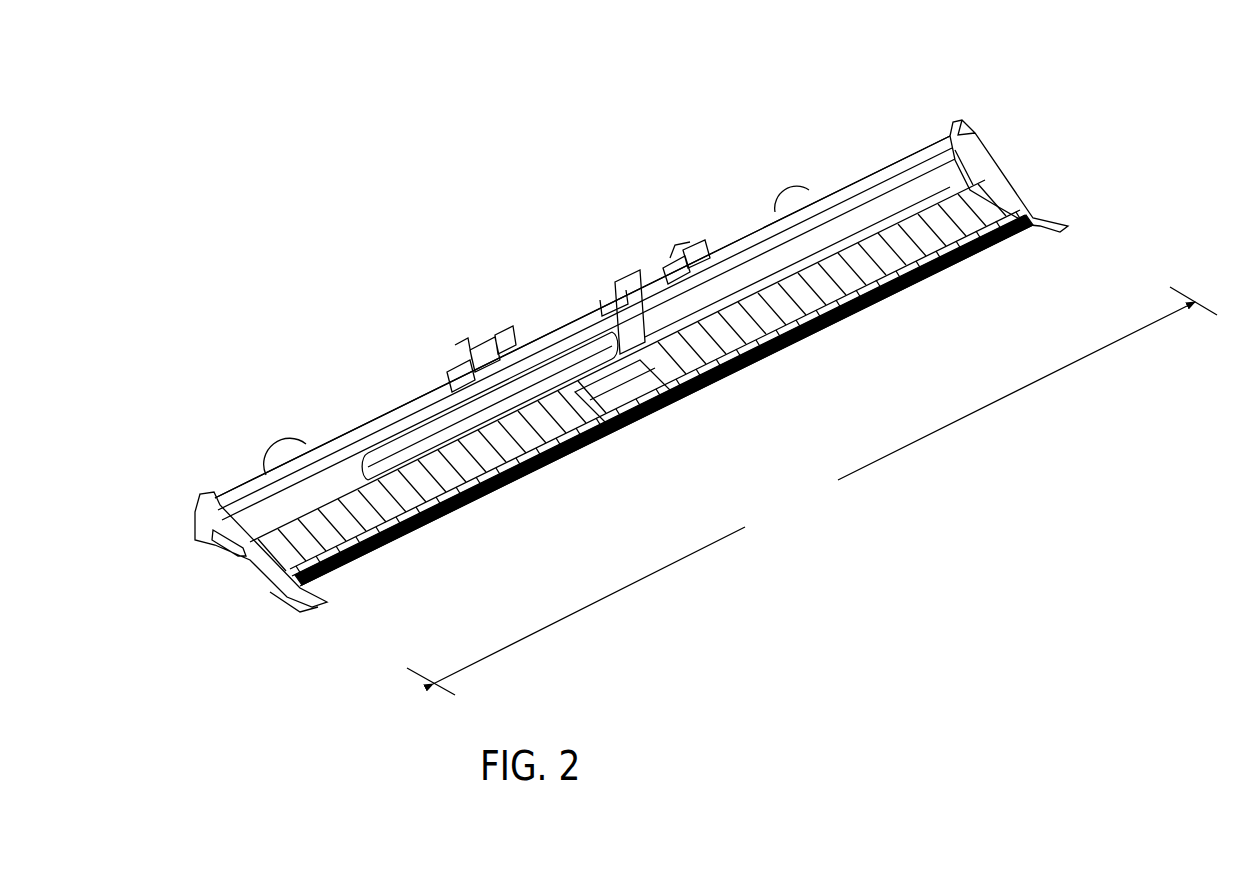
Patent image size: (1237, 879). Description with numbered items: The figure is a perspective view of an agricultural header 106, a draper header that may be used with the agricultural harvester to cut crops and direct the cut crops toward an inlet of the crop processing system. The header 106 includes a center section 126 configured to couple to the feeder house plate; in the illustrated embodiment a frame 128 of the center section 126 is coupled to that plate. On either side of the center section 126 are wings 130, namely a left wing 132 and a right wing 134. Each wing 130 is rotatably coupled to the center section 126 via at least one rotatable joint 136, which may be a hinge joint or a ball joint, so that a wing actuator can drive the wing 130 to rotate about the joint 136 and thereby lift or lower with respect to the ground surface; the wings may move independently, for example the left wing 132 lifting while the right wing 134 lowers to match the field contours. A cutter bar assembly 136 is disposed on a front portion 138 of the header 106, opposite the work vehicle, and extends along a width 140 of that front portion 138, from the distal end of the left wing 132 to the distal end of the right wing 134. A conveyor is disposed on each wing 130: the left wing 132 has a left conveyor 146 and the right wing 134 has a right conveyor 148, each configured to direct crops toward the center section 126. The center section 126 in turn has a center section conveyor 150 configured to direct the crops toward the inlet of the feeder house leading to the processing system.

The agricultural header 106 is at (528, 160).
The center section 126 is at (567, 276).
The frame 128 is at (655, 272).
The wings 130 is at (626, 337).
The left wing 132 is at (858, 150).
The right wing 134 is at (343, 393).
The rotatable joint 136 is at (678, 238).
The front portion 138 is at (682, 427).
The width 140 is at (812, 491).
The left conveyor 146 is at (862, 272).
The right conveyor 148 is at (455, 488).
The center section conveyor 150 is at (583, 358).